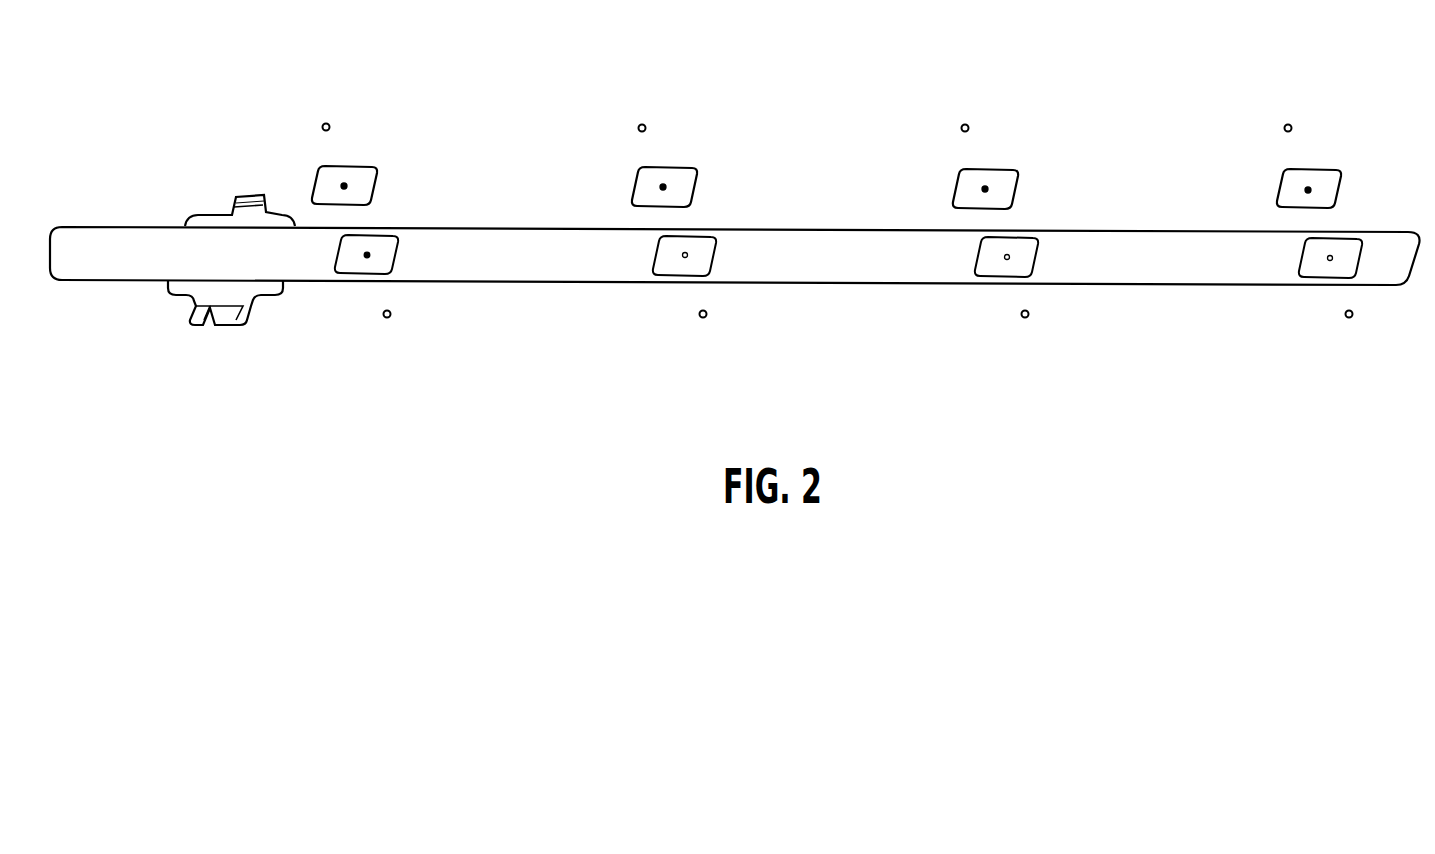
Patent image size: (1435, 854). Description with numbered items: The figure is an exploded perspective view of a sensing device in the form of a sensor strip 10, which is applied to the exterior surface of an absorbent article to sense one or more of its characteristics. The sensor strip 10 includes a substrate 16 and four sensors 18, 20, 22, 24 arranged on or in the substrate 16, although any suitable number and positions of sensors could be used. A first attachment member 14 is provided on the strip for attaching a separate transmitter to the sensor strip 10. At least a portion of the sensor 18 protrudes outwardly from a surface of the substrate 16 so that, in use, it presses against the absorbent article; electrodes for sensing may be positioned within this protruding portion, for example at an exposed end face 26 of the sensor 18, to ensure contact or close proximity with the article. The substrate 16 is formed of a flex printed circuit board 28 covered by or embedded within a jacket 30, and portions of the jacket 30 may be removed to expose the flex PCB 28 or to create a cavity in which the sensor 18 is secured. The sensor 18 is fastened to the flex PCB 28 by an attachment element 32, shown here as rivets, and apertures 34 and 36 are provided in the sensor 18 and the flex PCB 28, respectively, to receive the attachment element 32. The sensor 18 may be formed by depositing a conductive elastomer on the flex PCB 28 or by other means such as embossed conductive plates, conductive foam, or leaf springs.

The sensor strip 10 is at (818, 150).
The first attachment member 14 is at (211, 214).
The substrate 16 is at (547, 228).
The sensor 18 is at (384, 150).
The sensor 20 is at (668, 166).
The sensor 22 is at (990, 168).
The sensor 24 is at (1313, 168).
The exposed end face 26 is at (378, 177).
The flex printed circuit board 28 is at (377, 291).
The jacket 30 is at (492, 268).
The attachment element 32 is at (325, 122).
The aperture 34 is at (346, 188).
The aperture 36 is at (369, 256).